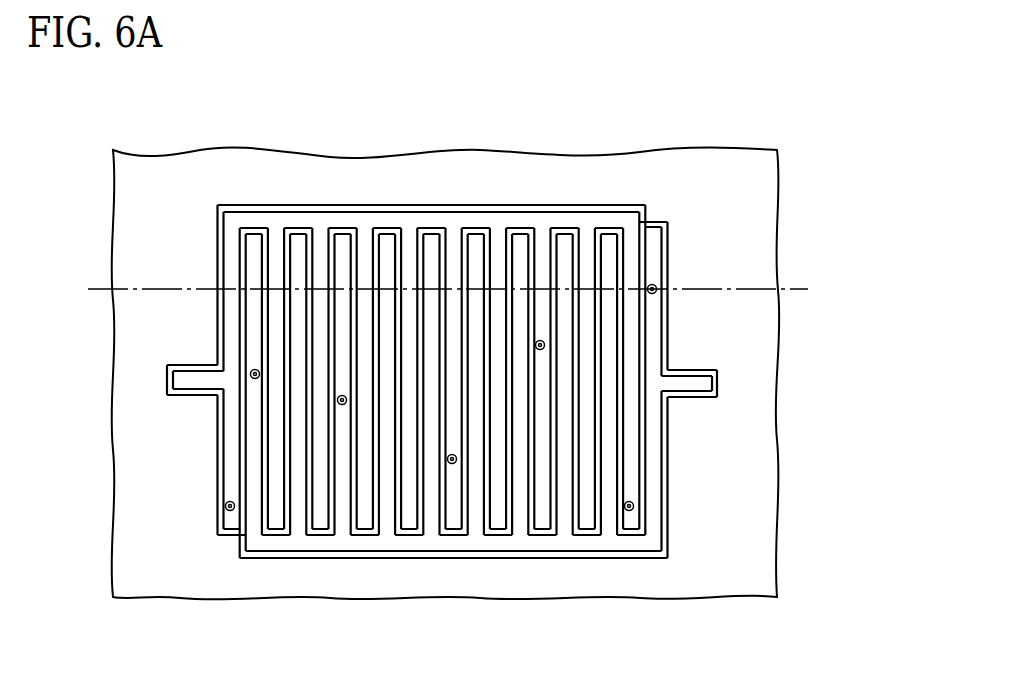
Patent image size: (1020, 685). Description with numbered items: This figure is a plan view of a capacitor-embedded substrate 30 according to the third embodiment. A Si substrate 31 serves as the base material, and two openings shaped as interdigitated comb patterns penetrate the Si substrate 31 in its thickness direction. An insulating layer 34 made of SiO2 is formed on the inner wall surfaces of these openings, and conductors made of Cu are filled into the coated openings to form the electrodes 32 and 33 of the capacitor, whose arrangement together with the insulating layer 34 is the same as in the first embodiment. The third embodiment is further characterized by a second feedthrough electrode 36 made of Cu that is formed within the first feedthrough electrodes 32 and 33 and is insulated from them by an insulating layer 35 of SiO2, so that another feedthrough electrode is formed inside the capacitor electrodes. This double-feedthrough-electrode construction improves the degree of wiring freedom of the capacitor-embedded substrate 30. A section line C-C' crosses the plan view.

The capacitor-embedded substrate 30 is at (557, 114).
The Si substrate 31 is at (758, 417).
The electrode 32 is at (403, 215).
The electrode 33 is at (475, 540).
The insulating layer 34 is at (238, 210).
The insulating layer 35 is at (661, 283).
The second feedthrough electrode 36 is at (441, 398).